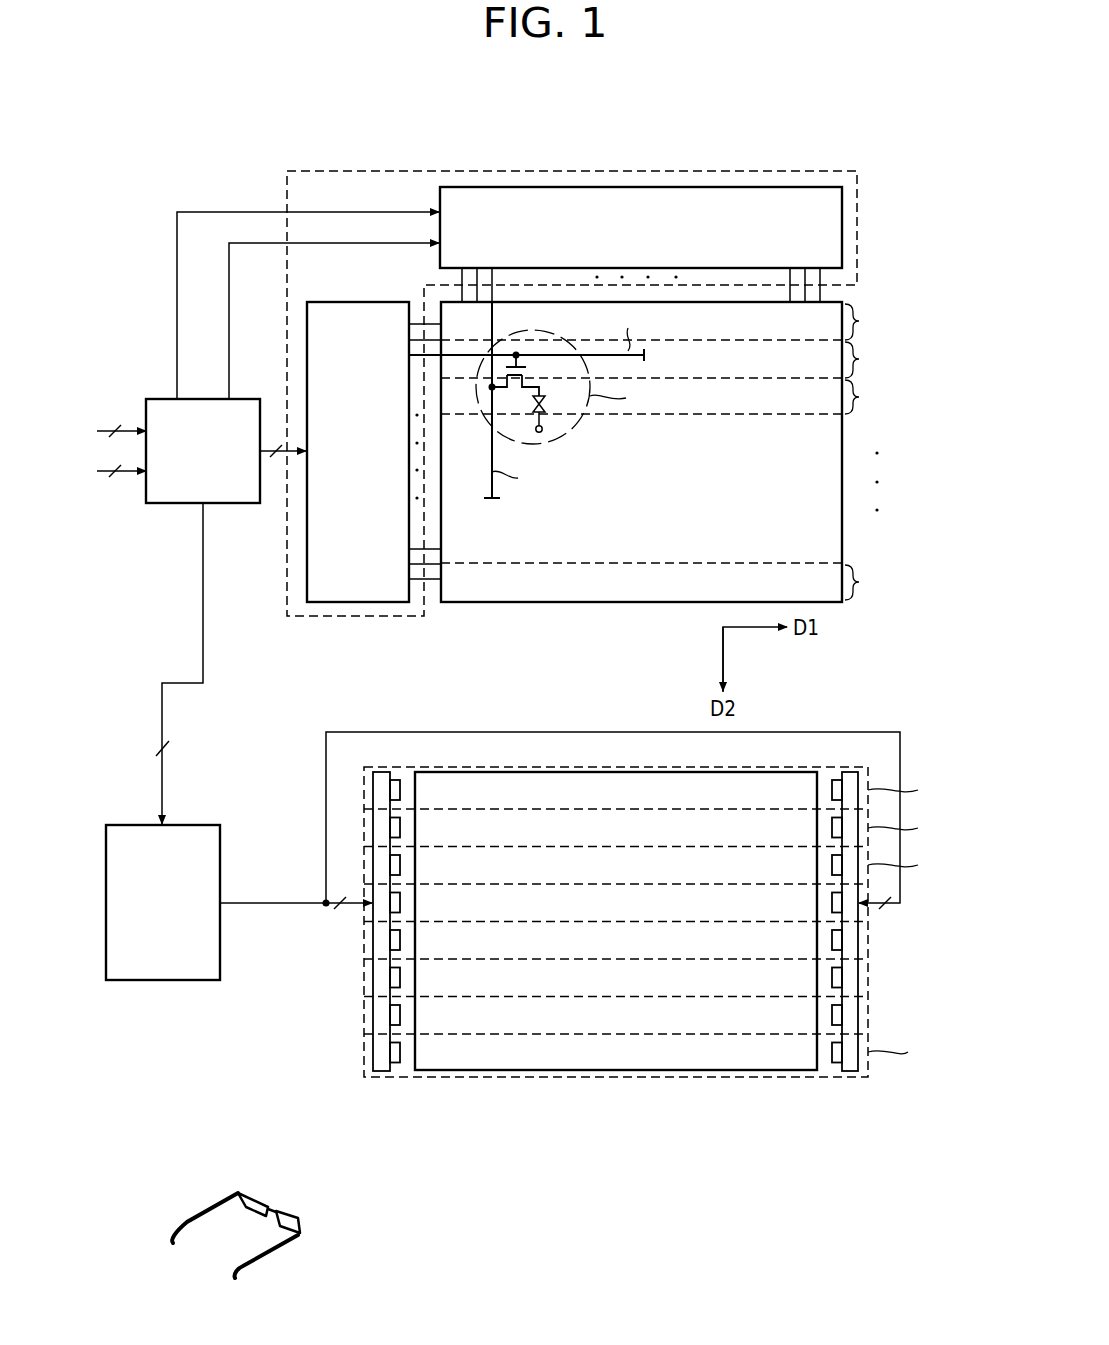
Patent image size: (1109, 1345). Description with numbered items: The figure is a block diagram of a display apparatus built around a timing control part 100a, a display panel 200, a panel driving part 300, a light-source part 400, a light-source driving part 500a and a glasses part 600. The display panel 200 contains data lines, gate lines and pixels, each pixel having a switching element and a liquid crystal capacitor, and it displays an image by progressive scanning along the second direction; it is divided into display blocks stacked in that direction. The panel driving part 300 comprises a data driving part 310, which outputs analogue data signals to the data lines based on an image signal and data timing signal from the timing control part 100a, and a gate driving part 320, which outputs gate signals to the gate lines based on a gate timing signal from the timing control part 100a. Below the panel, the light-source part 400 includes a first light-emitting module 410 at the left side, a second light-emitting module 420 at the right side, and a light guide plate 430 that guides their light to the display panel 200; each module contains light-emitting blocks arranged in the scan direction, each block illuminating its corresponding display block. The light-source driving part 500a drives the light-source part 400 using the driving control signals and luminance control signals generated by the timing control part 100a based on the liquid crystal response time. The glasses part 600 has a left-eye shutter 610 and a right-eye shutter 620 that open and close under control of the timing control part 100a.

The timing control part 100a is at (150, 504).
The display panel 200 is at (597, 603).
The panel driving part 300 is at (403, 170).
The data driving part 310 is at (638, 186).
The gate driving part 320 is at (307, 578).
The light-source part 400 is at (656, 972).
The first light-emitting module 410 is at (382, 1072).
The second light-emitting module 420 is at (850, 1072).
The light guide plate 430 is at (616, 955).
The light-source driving part 500a is at (160, 981).
The glasses part 600 is at (255, 1222).
The left-eye shutter 610 is at (254, 1195).
The right-eye shutter 620 is at (291, 1218).